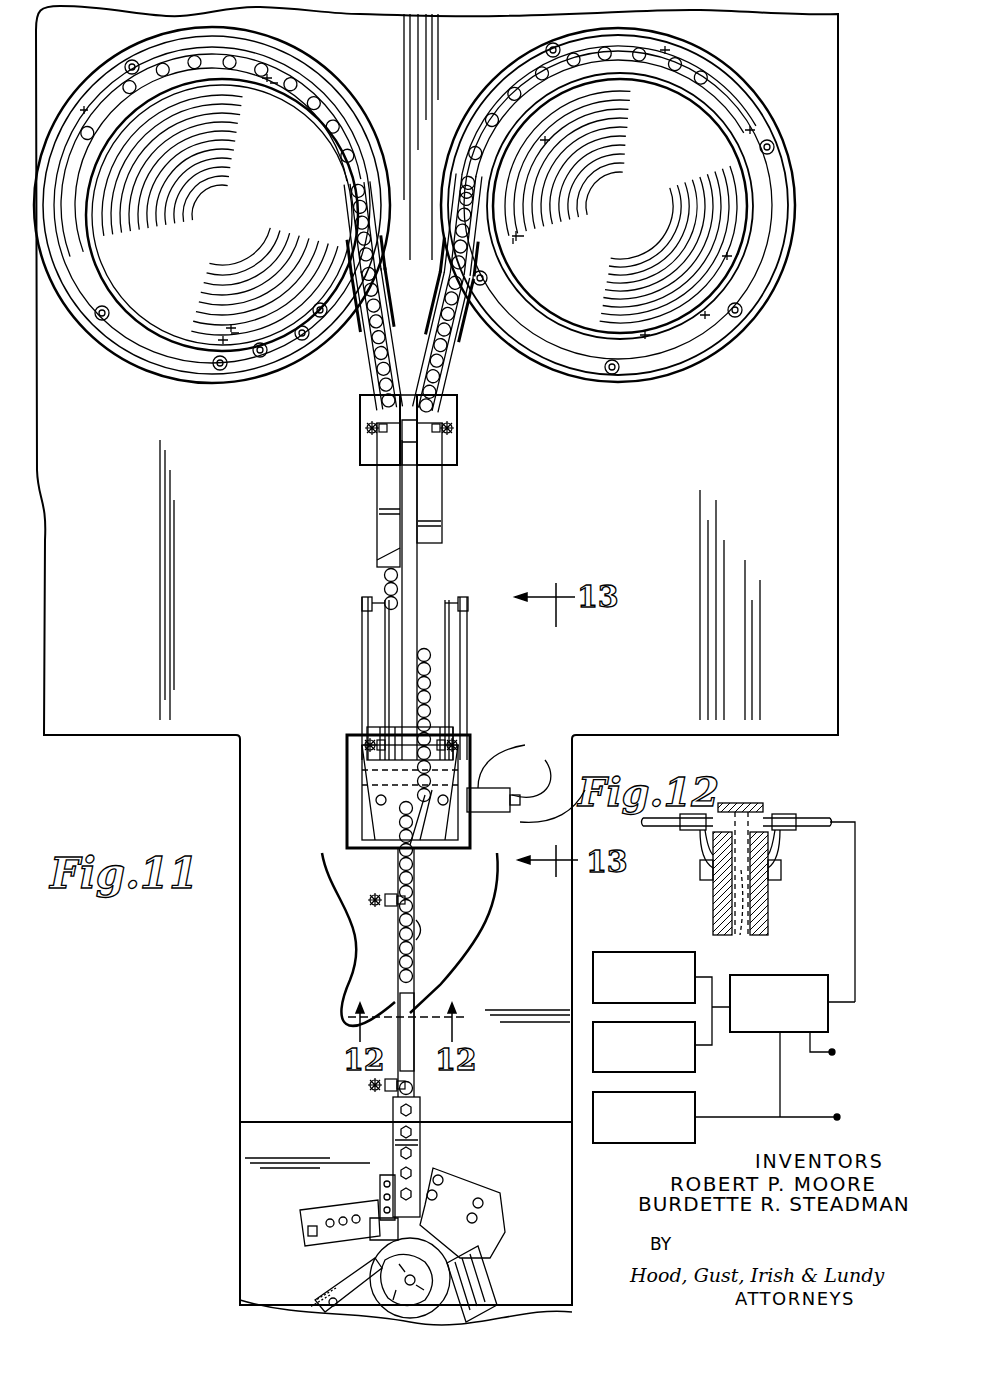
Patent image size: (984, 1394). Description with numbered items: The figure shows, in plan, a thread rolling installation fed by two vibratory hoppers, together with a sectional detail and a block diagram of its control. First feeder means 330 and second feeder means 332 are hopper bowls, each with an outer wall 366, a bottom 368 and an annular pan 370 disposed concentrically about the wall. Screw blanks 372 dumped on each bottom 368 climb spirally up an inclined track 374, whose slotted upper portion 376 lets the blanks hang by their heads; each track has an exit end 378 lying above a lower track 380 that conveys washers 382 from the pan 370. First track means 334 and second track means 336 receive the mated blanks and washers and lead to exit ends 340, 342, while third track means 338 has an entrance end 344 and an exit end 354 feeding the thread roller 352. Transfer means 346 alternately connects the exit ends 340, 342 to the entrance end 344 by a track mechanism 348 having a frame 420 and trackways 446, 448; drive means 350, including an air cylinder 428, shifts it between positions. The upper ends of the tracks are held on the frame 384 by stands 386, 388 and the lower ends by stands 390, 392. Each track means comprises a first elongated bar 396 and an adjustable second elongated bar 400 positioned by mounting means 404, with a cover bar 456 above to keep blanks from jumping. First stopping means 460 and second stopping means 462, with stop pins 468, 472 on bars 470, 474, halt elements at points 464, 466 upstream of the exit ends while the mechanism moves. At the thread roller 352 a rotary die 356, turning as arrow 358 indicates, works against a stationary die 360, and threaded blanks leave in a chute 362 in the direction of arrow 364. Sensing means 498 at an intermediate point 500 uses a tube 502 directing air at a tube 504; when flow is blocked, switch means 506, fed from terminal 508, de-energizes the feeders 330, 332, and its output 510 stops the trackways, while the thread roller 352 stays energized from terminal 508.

In FIG. 12, the first feeder means 330 is at (645, 950).
In FIG. 11, the second feeder means 332 is at (342, 64).
In FIG. 12, the second feeder means 332 is at (692, 1055).
In FIG. 11, the first track means 334 is at (450, 512).
In FIG. 11, the second track means 336 is at (370, 505).
In FIG. 11, the third track means 338 is at (385, 945).
In FIG. 12, the third track means 338 is at (712, 897).
In FIG. 11, the exit end 340 is at (446, 720).
In FIG. 11, the exit end 342 is at (380, 715).
In FIG. 11, the entrance end 344 is at (424, 892).
In FIG. 11, the transfer means 346 is at (265, 783).
In FIG. 11, the track mechanism 348 is at (365, 822).
In FIG. 11, the drive means 350 is at (515, 790).
In FIG. 11, the thread rolling apparatus 352 is at (290, 1220).
In FIG. 12, the thread rolling apparatus 352 is at (697, 1105).
In FIG. 11, the exit end 354 is at (432, 1105).
In FIG. 11, the rotary die 356 is at (375, 1248).
In FIG. 11, the arrow 358 is at (492, 1312).
In FIG. 11, the stationary die 360 is at (470, 1244).
In FIG. 11, the chute 362 is at (535, 1266).
In FIG. 11, the arrow 364 is at (490, 1290).
In FIG. 11, the outer wall 366 is at (88, 128).
In FIG. 11, the bottom 368 is at (203, 249).
In FIG. 11, the annular pan 370 is at (158, 368).
In FIG. 11, the screw blanks 372 is at (325, 95).
In FIG. 12, the screw blanks 372 is at (742, 938).
In FIG. 11, the track 374 is at (168, 330).
In FIG. 11, the slot 376 is at (352, 160).
In FIG. 11, the exit end 378 is at (444, 262).
In FIG. 11, the lower track 380 is at (385, 300).
In FIG. 11, the washers 382 is at (97, 320).
In FIG. 12, the washers 382 is at (730, 800).
In FIG. 11, the frame 384 is at (785, 449).
In FIG. 11, the stand 386 is at (456, 448).
In FIG. 11, the stand 388 is at (360, 452).
In FIG. 11, the stand 390 is at (452, 740).
In FIG. 11, the stand 392 is at (370, 735).
In FIG. 11, the first elongated bar 396 is at (442, 937).
In FIG. 12, the first elongated bar 396 is at (770, 918).
In FIG. 11, the second elongated bar 400 is at (400, 1000).
In FIG. 12, the second elongated bar 400 is at (718, 926).
In FIG. 11, the mounting means 404 is at (352, 428).
In FIG. 11, the frame 420 is at (462, 830).
In FIG. 11, the air cylinder 428 is at (505, 814).
In FIG. 11, the trackway 446 is at (430, 836).
In FIG. 11, the trackway 448 is at (395, 783).
In FIG. 11, the cover bar 456 is at (445, 480).
In FIG. 12, the cover bar 456 is at (745, 806).
In FIG. 11, the first stopping means 460 is at (474, 600).
In FIG. 11, the second stopping means 462 is at (358, 598).
In FIG. 11, the first point 464 is at (430, 598).
In FIG. 11, the second point 466 is at (385, 604).
In FIG. 11, the stop pin 468 is at (457, 632).
In FIG. 11, the bar 470 is at (463, 668).
In FIG. 11, the stop pin 472 is at (375, 600).
In FIG. 11, the bar 474 is at (362, 666).
In FIG. 11, the sensing means 498 is at (385, 1000).
In FIG. 12, the sensing means 498 is at (793, 792).
In FIG. 11, the intermediate point 500 is at (425, 1008).
In FIG. 12, the tube 502 is at (648, 826).
In FIG. 12, the tube 504 is at (820, 818).
In FIG. 12, the switch means 506 is at (788, 978).
In FIG. 12, the terminal 508 is at (838, 1117).
In FIG. 12, the output 510 is at (832, 1052).